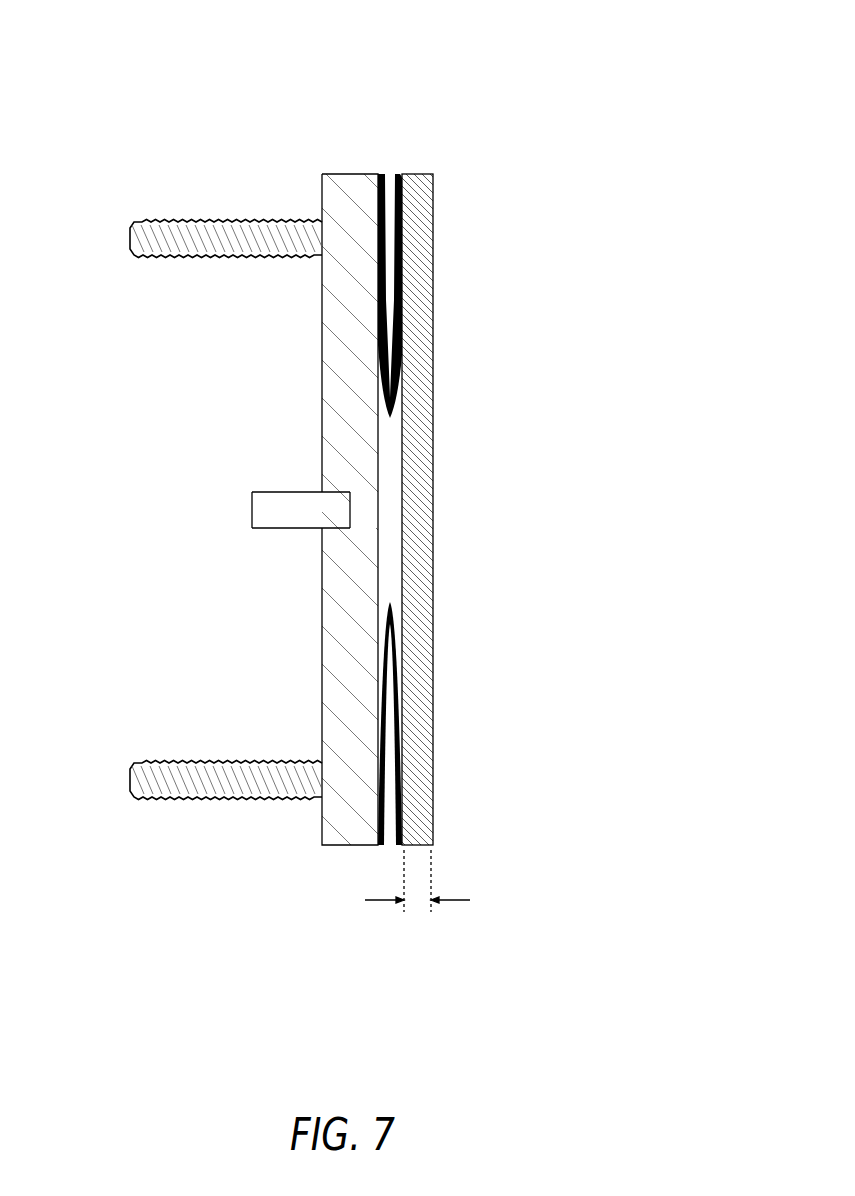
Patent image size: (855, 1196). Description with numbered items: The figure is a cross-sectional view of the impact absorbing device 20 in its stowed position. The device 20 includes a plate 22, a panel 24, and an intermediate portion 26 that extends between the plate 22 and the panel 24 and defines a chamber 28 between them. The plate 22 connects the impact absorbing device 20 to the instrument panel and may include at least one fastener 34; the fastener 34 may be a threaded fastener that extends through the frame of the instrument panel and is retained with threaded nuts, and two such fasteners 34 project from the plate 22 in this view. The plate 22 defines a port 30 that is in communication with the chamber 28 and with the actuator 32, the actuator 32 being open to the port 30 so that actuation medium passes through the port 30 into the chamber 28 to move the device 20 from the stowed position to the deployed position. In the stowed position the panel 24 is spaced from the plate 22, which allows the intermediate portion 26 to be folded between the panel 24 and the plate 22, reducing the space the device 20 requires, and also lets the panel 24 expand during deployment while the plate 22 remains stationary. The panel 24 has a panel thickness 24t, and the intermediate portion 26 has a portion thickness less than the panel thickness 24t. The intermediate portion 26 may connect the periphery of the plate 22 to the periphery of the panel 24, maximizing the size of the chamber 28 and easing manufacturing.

The impact absorbing device 20 is at (60, 100).
The plate 22 is at (369, 436).
The panel 24 is at (418, 174).
The panel thickness 24t is at (437, 881).
The intermediate portion 26 is at (387, 197).
The chamber 28 is at (387, 454).
The port 30 is at (363, 512).
The actuator 32 is at (252, 509).
The fastener 34 is at (129, 240).